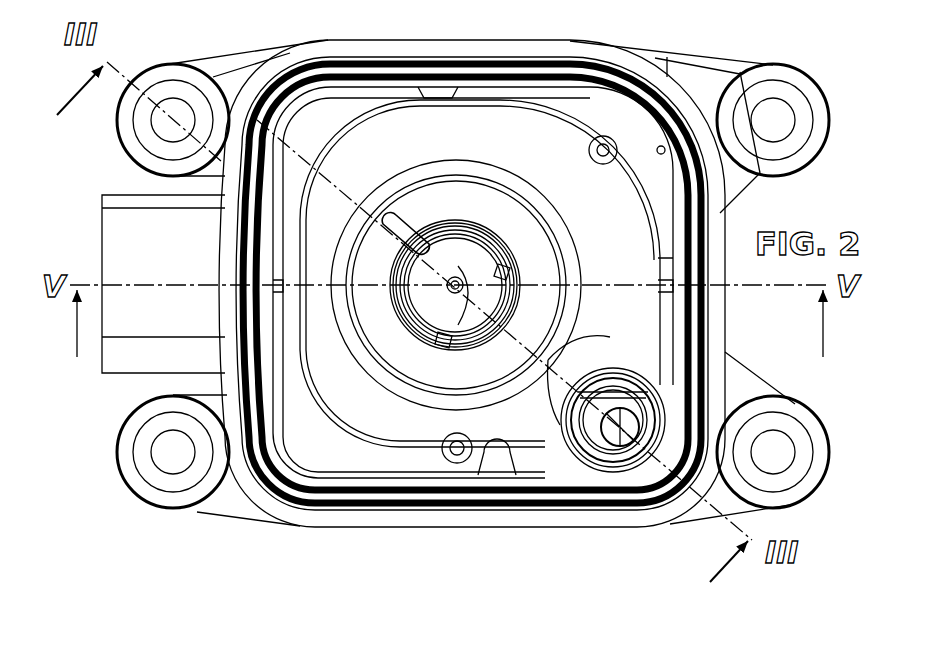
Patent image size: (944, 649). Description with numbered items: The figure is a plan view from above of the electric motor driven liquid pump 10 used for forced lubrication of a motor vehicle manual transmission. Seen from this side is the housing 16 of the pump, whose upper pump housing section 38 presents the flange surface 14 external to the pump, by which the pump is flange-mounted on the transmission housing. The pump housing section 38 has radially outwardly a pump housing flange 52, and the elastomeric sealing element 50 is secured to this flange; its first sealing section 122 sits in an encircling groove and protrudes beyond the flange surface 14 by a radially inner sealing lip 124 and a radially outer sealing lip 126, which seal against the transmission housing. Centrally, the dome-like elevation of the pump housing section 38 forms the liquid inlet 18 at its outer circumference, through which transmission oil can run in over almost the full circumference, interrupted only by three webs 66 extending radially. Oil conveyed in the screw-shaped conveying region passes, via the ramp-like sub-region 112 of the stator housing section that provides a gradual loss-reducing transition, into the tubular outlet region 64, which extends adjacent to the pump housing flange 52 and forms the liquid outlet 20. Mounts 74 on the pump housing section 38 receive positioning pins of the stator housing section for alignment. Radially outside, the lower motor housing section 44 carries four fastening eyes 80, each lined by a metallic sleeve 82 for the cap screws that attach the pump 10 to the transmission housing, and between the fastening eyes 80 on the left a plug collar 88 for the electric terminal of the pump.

The liquid pump 10 is at (676, 10).
The flange surface external to the pump 14 is at (547, 55).
The housing 16 is at (728, 347).
The liquid inlet 18 is at (485, 343).
The liquid outlet 20 is at (622, 382).
The pump housing section 38 is at (480, 108).
The motor housing section 44 is at (232, 76).
The sealing element 50 is at (388, 67).
The pump housing flange 52 is at (724, 227).
The tubular outlet region 64 is at (585, 438).
The webs 66 is at (497, 270).
The mounts 74 is at (598, 150).
The fastening eyes 80 is at (152, 162).
The metallic sleeve 82 is at (165, 88).
The plug collar 88 is at (170, 259).
The sub-region of the stator housing section 112 is at (590, 378).
The first sealing section 122 is at (590, 93).
The radially inner sealing lip 124 is at (300, 93).
The radially outer sealing lip 126 is at (288, 82).